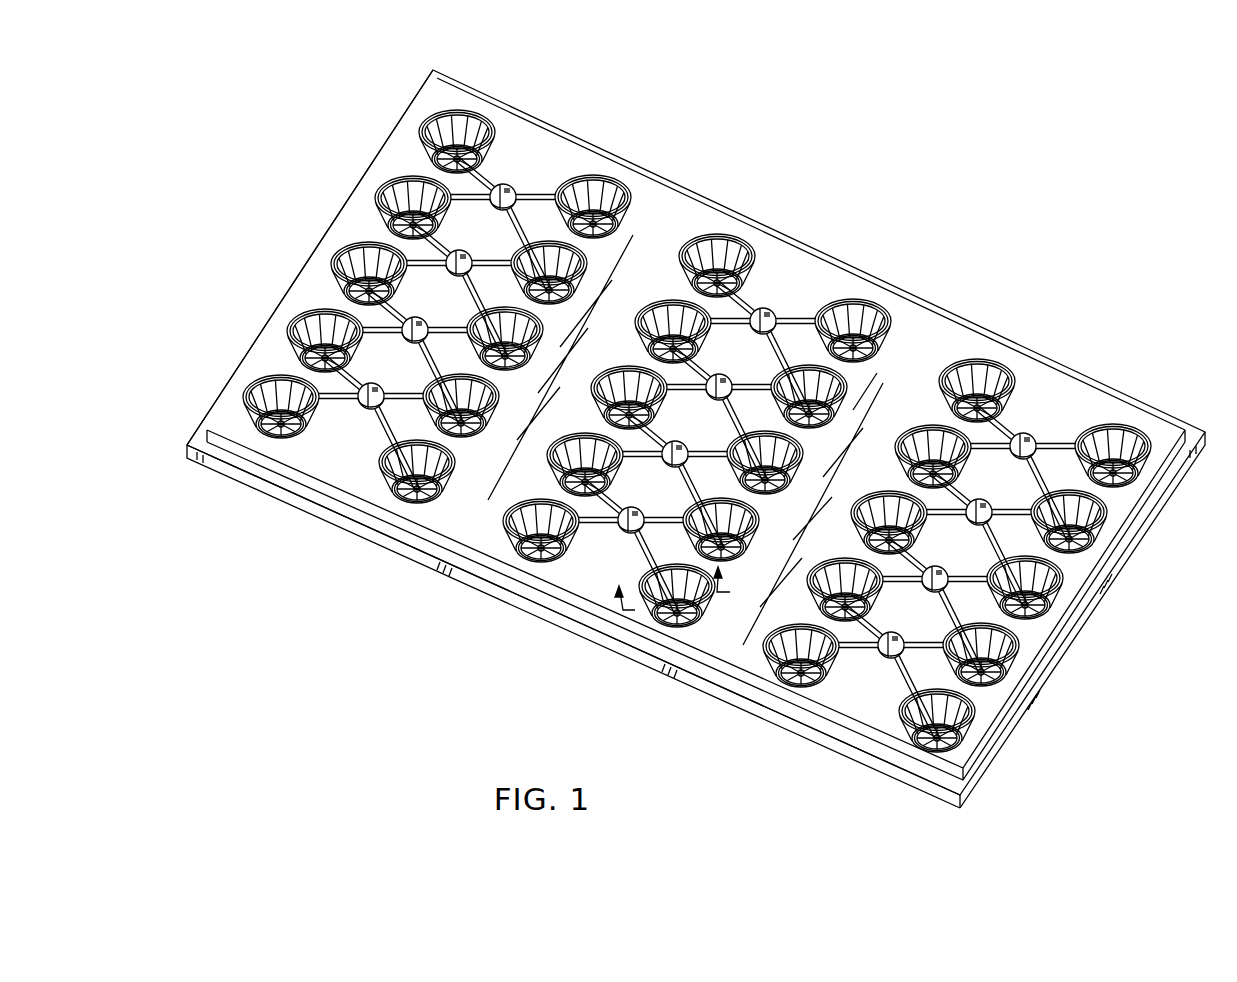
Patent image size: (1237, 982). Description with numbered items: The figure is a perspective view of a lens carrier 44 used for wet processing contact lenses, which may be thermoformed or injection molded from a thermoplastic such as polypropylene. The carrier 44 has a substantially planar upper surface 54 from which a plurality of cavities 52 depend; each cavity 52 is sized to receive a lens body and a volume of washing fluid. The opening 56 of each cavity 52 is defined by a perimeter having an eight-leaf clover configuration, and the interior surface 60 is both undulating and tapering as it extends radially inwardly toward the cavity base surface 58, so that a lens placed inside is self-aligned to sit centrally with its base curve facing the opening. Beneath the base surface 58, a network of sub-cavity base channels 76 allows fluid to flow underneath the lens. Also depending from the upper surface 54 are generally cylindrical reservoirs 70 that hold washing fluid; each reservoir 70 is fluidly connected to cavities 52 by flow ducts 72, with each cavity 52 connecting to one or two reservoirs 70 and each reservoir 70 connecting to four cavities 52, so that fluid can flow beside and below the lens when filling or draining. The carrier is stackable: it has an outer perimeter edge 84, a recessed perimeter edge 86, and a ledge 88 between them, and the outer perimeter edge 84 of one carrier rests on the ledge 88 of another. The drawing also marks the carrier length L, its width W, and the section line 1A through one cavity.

The lens carrier 44 is at (962, 271).
The cavity 52 is at (457, 110).
The upper surface 54 is at (915, 322).
The opening 56 is at (590, 176).
The cavity base surface 58 is at (975, 728).
The interior surface 60 is at (718, 235).
The reservoir 70 is at (768, 309).
The flow duct 72 is at (340, 394).
The sub-cavity base channel 76 is at (976, 360).
The outer perimeter edge 84 is at (1155, 408).
The recessed perimeter edge 86 is at (1133, 522).
The ledge 88 is at (1172, 478).
The length L is at (318, 246).
The width W is at (622, 645).
The section line 1A is at (679, 586).